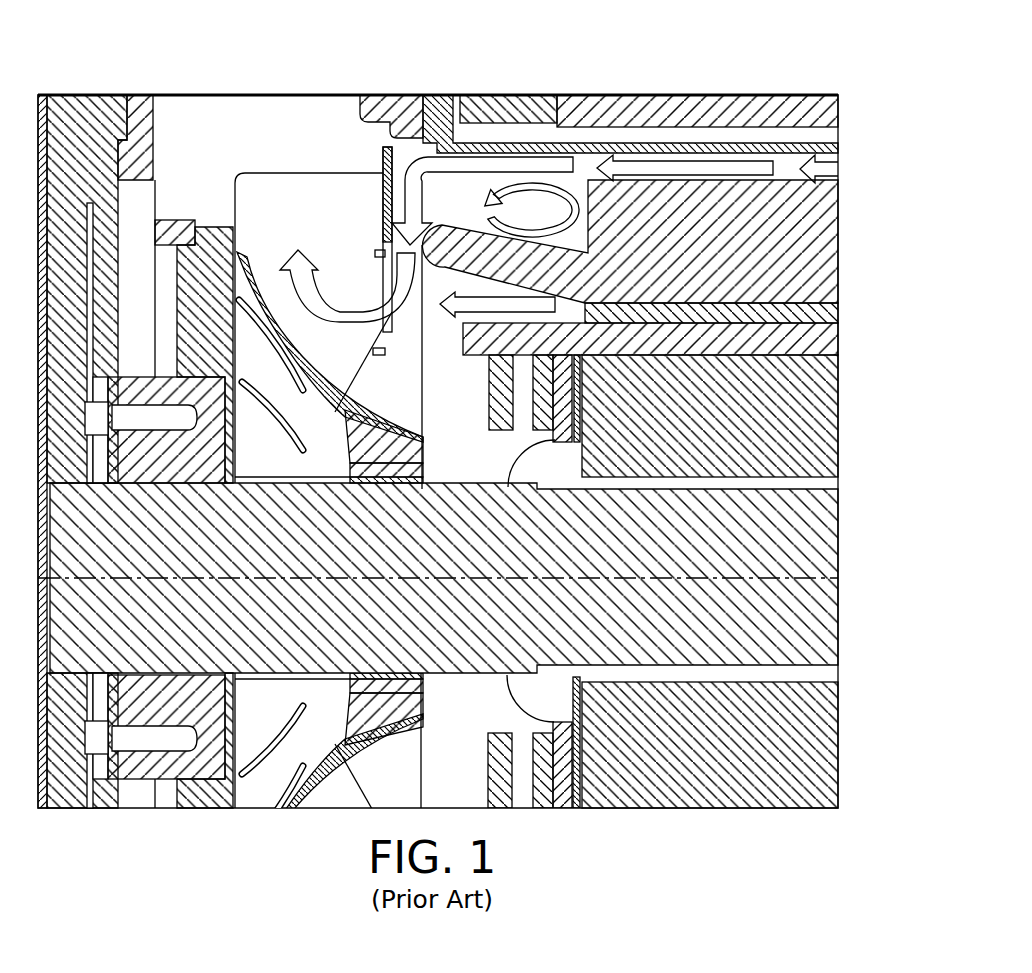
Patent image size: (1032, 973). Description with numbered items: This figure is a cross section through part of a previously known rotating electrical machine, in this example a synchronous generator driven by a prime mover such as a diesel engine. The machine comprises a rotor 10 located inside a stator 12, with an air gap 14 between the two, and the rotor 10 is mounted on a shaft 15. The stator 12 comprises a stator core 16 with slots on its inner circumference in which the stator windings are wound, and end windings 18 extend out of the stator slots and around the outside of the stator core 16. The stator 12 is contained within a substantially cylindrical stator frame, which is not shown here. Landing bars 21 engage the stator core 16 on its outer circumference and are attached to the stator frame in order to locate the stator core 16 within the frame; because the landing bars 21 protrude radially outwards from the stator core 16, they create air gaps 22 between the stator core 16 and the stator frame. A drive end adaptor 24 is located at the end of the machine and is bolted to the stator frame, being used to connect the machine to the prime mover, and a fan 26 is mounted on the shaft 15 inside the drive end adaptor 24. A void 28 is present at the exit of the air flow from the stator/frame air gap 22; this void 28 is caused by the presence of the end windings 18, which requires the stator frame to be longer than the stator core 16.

The rotor 10 is at (838, 436).
The stator 12 is at (838, 220).
The air gap 14 is at (838, 316).
The shaft 15 is at (838, 562).
The stator core 16 is at (820, 278).
The end windings 18 is at (473, 228).
The landing bars 21 is at (838, 140).
The air gaps 22 is at (838, 172).
The drive end adaptor 24 is at (150, 96).
The fan 26 is at (300, 190).
The void 28 is at (537, 212).